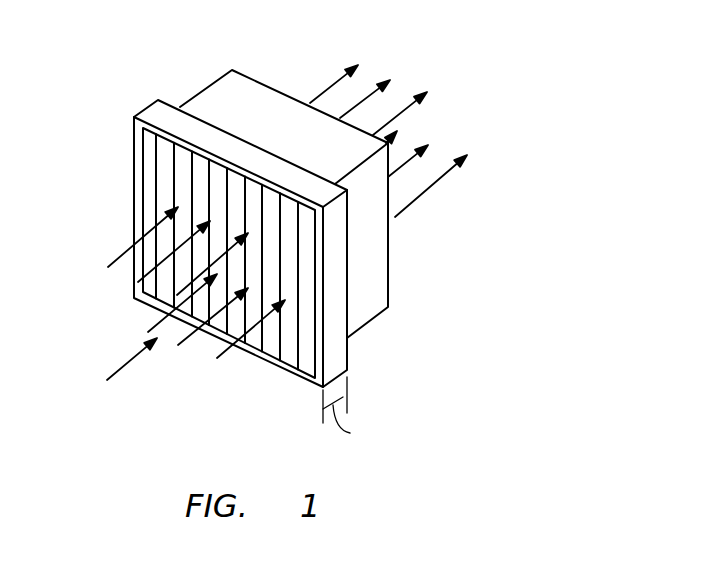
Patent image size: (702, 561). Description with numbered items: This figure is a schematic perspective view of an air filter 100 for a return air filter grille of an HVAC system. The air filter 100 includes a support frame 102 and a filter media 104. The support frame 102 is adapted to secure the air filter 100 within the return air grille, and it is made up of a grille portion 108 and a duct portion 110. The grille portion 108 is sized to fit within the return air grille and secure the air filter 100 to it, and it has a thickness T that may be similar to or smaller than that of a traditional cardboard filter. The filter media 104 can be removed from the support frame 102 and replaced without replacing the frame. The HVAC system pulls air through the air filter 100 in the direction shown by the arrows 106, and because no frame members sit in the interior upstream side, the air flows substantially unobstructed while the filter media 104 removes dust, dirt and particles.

The air filter 100 is at (148, 58).
The support frame 102 is at (231, 100).
The filter media 104 is at (196, 264).
The arrows 106 is at (107, 263).
The grille portion 108 is at (333, 292).
The duct portion 110 is at (270, 102).